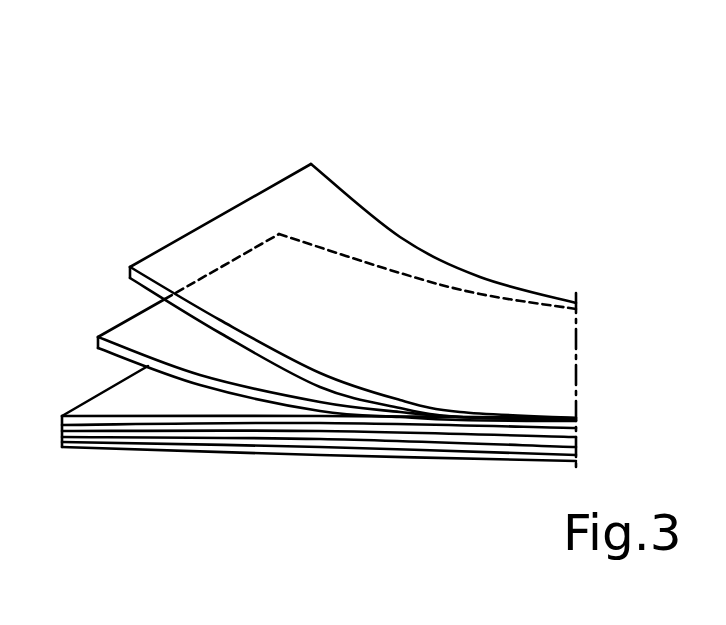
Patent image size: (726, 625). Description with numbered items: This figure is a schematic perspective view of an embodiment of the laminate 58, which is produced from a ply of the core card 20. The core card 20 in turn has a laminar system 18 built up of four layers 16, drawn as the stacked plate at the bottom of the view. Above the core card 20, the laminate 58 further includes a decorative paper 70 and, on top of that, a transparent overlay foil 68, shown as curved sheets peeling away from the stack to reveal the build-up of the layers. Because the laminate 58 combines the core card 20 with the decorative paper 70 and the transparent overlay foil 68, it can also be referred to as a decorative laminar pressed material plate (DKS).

The layers 16 is at (319, 486).
The laminar system 18 is at (213, 465).
The core card 20 is at (304, 444).
The laminate 58 is at (598, 222).
The transparent overlay foil 68 is at (232, 228).
The decorative paper 70 is at (130, 337).